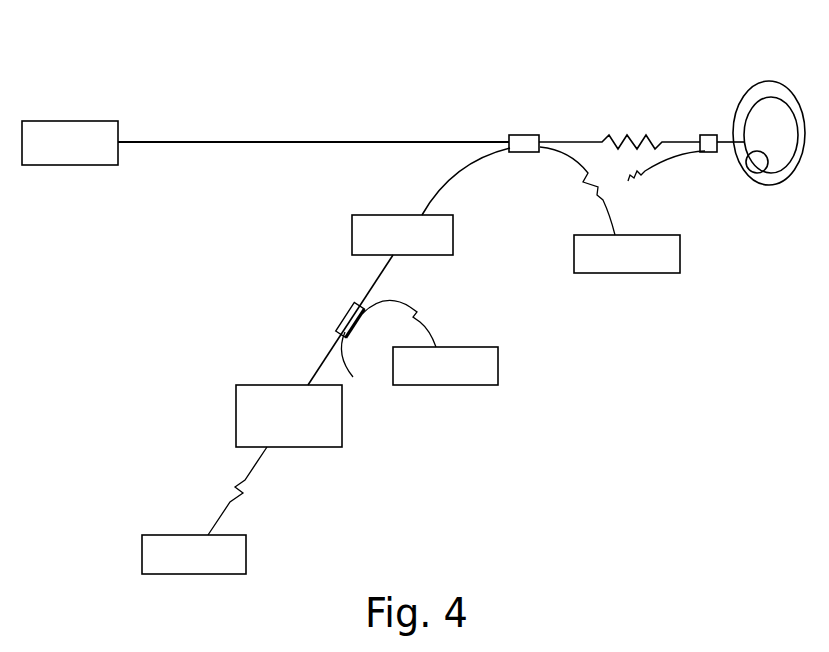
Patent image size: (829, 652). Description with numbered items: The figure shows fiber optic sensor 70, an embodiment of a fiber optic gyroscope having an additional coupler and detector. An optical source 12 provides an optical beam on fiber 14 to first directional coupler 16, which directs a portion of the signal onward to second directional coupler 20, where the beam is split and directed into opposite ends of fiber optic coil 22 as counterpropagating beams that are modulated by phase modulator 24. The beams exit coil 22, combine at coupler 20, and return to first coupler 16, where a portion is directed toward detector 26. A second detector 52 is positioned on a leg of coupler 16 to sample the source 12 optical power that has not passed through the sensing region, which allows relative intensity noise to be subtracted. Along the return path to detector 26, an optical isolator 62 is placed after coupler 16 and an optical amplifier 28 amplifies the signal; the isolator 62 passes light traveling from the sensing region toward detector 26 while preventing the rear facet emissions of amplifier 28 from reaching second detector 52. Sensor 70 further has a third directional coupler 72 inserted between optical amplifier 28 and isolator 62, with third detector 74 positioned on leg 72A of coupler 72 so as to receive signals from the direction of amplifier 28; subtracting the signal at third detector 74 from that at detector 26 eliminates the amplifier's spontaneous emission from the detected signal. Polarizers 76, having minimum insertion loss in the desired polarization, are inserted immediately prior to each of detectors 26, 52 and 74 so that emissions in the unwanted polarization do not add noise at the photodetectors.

The optical source 12 is at (68, 121).
The fiber 14 is at (205, 141).
The first directional coupler 16 is at (523, 135).
The second directional coupler 20 is at (706, 135).
The fiber optic coil 22 is at (765, 83).
The phase modulator 24 is at (748, 171).
The detector 26 is at (246, 555).
The optical amplifier 28 is at (342, 418).
The second detector 52 is at (625, 274).
The optical isolator 62 is at (455, 233).
The fiber optic sensor 70 is at (583, 393).
The third directional coupler 72 is at (340, 314).
The leg of third coupler 72A is at (387, 305).
The third detector 74 is at (498, 363).
The polarizers 76 is at (583, 189).